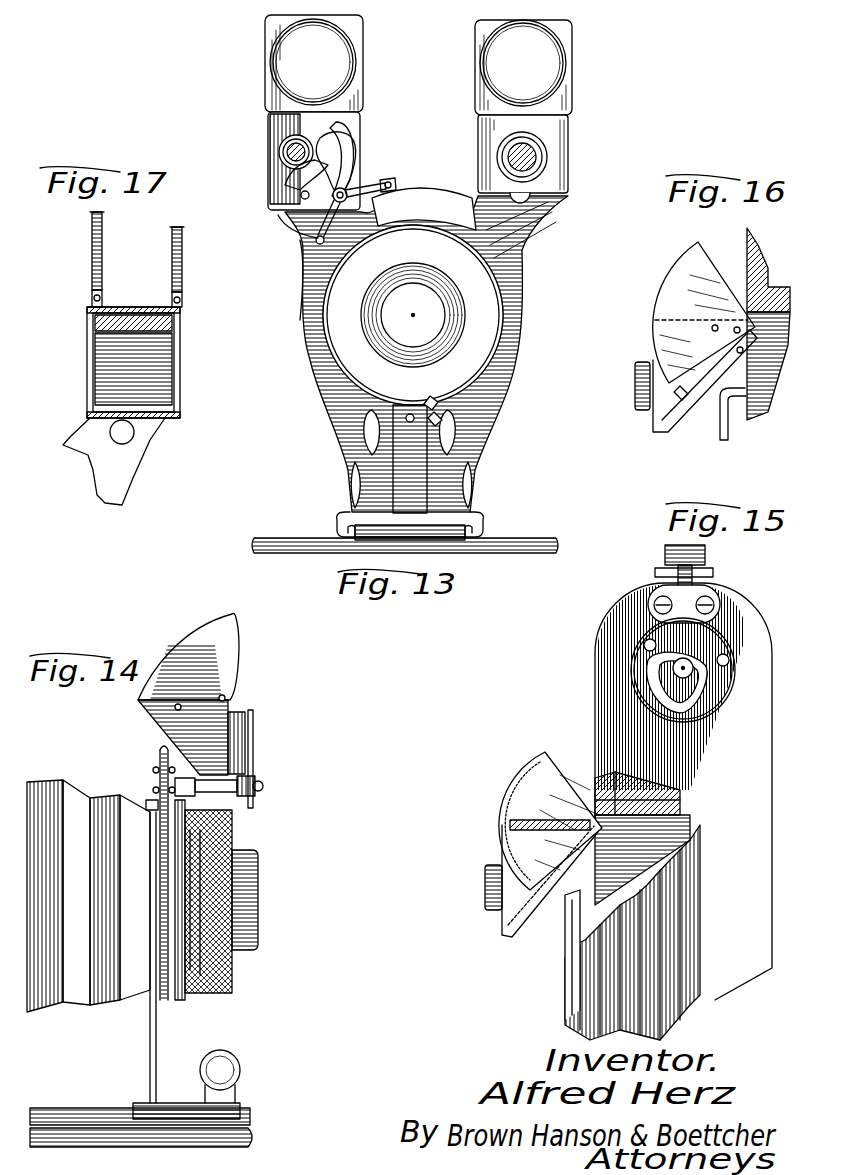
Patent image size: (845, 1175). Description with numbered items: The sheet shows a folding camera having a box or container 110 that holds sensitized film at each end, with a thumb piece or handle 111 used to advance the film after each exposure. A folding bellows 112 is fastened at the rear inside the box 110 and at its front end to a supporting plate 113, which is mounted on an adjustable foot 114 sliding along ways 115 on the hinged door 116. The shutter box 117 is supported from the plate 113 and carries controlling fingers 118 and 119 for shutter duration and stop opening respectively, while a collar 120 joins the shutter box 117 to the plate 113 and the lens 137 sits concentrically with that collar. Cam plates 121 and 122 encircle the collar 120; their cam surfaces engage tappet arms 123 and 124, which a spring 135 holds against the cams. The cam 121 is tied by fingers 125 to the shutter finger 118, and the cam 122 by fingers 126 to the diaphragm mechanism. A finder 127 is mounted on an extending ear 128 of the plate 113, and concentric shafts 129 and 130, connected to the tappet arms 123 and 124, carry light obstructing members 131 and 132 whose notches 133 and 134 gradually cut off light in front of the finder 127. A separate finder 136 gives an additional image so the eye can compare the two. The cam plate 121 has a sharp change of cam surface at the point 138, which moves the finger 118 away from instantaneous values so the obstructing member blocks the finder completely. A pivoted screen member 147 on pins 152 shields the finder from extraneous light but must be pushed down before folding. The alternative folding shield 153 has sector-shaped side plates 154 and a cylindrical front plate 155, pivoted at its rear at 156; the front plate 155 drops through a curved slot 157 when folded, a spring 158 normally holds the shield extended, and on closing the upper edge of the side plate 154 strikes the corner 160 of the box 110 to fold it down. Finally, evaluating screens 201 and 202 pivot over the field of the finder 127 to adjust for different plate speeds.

In FIG. 15, the box or container 110 is at (605, 640).
In FIG. 15, the thumb piece or handle 111 is at (645, 673).
In FIG. 14, the folding bellows 112 is at (48, 785).
In FIG. 15, the folding bellows 112 is at (580, 965).
In FIG. 13, the supporting plate 113 is at (508, 364).
In FIG. 14, the supporting plate 113 is at (156, 1035).
In FIG. 15, the supporting plate 113 is at (565, 1020).
In FIG. 13, the adjustable foot 114 is at (478, 517).
In FIG. 14, the adjustable foot 114 is at (235, 1103).
In FIG. 13, the ways 115 is at (340, 535).
In FIG. 14, the ways 115 is at (60, 1110).
In FIG. 13, the hinged door 116 is at (548, 545).
In FIG. 14, the hinged door 116 is at (250, 1140).
In FIG. 13, the shutter box 117 is at (488, 306).
In FIG. 14, the shutter box 117 is at (210, 845).
In FIG. 13, the controlling finger 118 is at (520, 262).
In FIG. 13, the controlling finger 119 is at (438, 405).
In FIG. 14, the collar 120 is at (258, 946).
In FIG. 13, the cam plate 121 is at (392, 207).
In FIG. 14, the cam plate 121 is at (190, 887).
In FIG. 13, the cam plate 122 is at (315, 283).
In FIG. 14, the cam plate 122 is at (200, 917).
In FIG. 13, the tappet arm 123 is at (368, 180).
In FIG. 14, the tappet arm 123 is at (154, 788).
In FIG. 13, the tappet arm 124 is at (298, 238).
In FIG. 14, the tappet arm 124 is at (150, 805).
In FIG. 13, the fingers 125 is at (545, 228).
In FIG. 13, the fingers 126 is at (436, 416).
In FIG. 13, the finder 127 is at (282, 120).
In FIG. 17, the finder 127 is at (182, 370).
In FIG. 13, the extending ear 128 is at (290, 216).
In FIG. 14, the extending ear 128 is at (158, 755).
In FIG. 14, the concentric shaft 129 is at (195, 790).
In FIG. 14, the concentric shaft 130 is at (164, 770).
In FIG. 13, the light obstructing member 131 is at (350, 130).
In FIG. 14, the light obstructing member 131 is at (250, 720).
In FIG. 13, the light obstructing member 132 is at (282, 163).
In FIG. 14, the light obstructing member 132 is at (258, 782).
In FIG. 13, the notch 133 is at (360, 110).
In FIG. 14, the notch 133 is at (253, 745).
In FIG. 13, the notch 134 is at (300, 178).
In FIG. 13, the spring 135 is at (350, 145).
In FIG. 13, the separate finder 136 is at (554, 158).
In FIG. 13, the lens 137 is at (430, 326).
In FIG. 13, the point of sharp change of cam surface 138 is at (464, 198).
In FIG. 13, the pivoted screen member 147 is at (265, 50).
In FIG. 14, the pivoted screen member 147 is at (183, 655).
In FIG. 13, the pins 152 is at (268, 98).
In FIG. 14, the pins 152 is at (226, 700).
In FIG. 15, the shield 153 is at (512, 777).
In FIG. 16, the side plates 154 is at (672, 283).
In FIG. 15, the side plates 154 is at (555, 760).
In FIG. 15, the front plate 155 is at (515, 812).
In FIG. 16, the pivot 156 is at (766, 370).
In FIG. 16, the curved slot 157 is at (688, 394).
In FIG. 15, the curved slot 157 is at (510, 890).
In FIG. 16, the spring 158 is at (742, 420).
In FIG. 15, the corner 160 is at (672, 800).
In FIG. 17, the evaluating screen 201 is at (93, 253).
In FIG. 17, the evaluating screen 202 is at (173, 259).